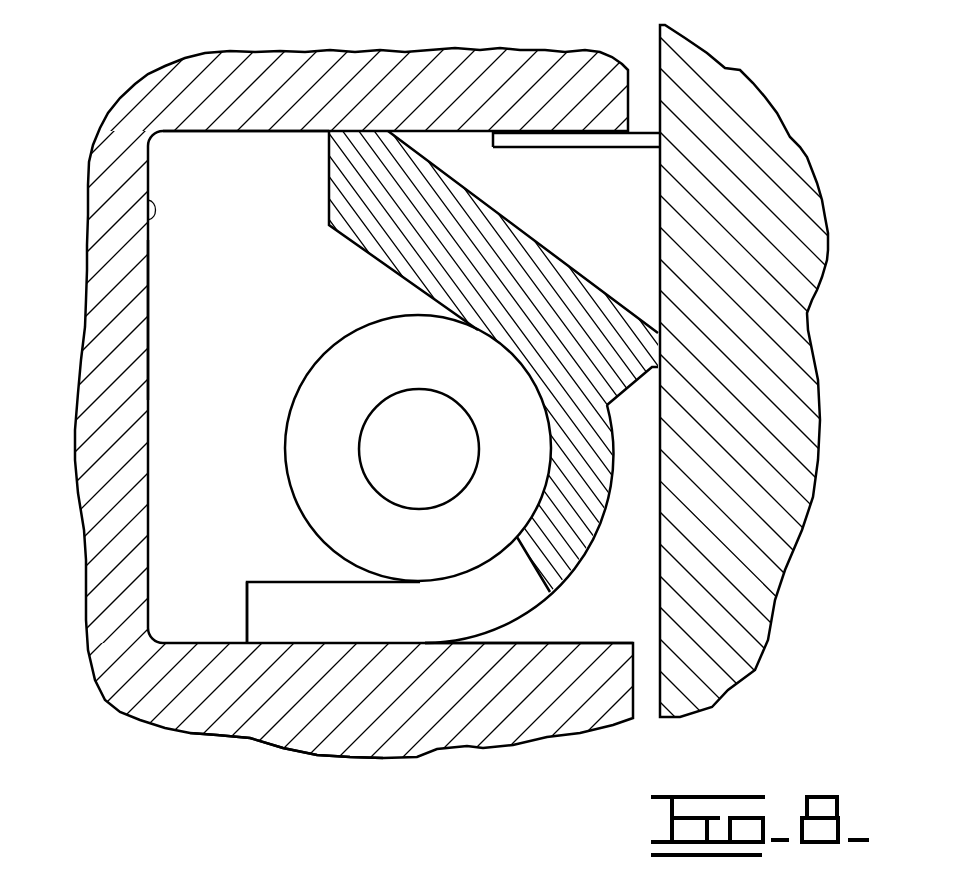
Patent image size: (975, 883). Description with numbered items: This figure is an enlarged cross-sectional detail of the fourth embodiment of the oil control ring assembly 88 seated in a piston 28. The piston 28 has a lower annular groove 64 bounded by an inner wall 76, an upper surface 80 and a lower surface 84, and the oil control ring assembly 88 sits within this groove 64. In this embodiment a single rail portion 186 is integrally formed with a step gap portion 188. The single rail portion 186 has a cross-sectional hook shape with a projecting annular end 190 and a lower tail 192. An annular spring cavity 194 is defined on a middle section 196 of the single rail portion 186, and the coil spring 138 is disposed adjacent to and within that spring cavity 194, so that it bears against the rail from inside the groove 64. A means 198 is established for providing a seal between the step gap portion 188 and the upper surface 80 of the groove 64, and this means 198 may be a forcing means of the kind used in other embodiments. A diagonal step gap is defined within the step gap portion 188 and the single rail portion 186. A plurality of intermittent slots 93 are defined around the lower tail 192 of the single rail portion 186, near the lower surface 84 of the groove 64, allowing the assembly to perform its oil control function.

The piston 28 is at (442, 62).
The lower annular groove 64 is at (152, 212).
The inner wall 76 is at (150, 315).
The upper surface 80 is at (290, 131).
The lower surface 84 is at (535, 643).
The oil control ring assembly 88 is at (200, 384).
The intermittent slots 93 is at (287, 628).
The coil spring 138 is at (288, 460).
The single rail portion 186 is at (612, 373).
The step gap portion 188 is at (640, 168).
The projecting annular end 190 is at (660, 342).
The lower tail 192 is at (248, 617).
The annular spring cavity 194 is at (355, 578).
The middle section 196 is at (557, 540).
The means for providing a seal 198 is at (551, 449).